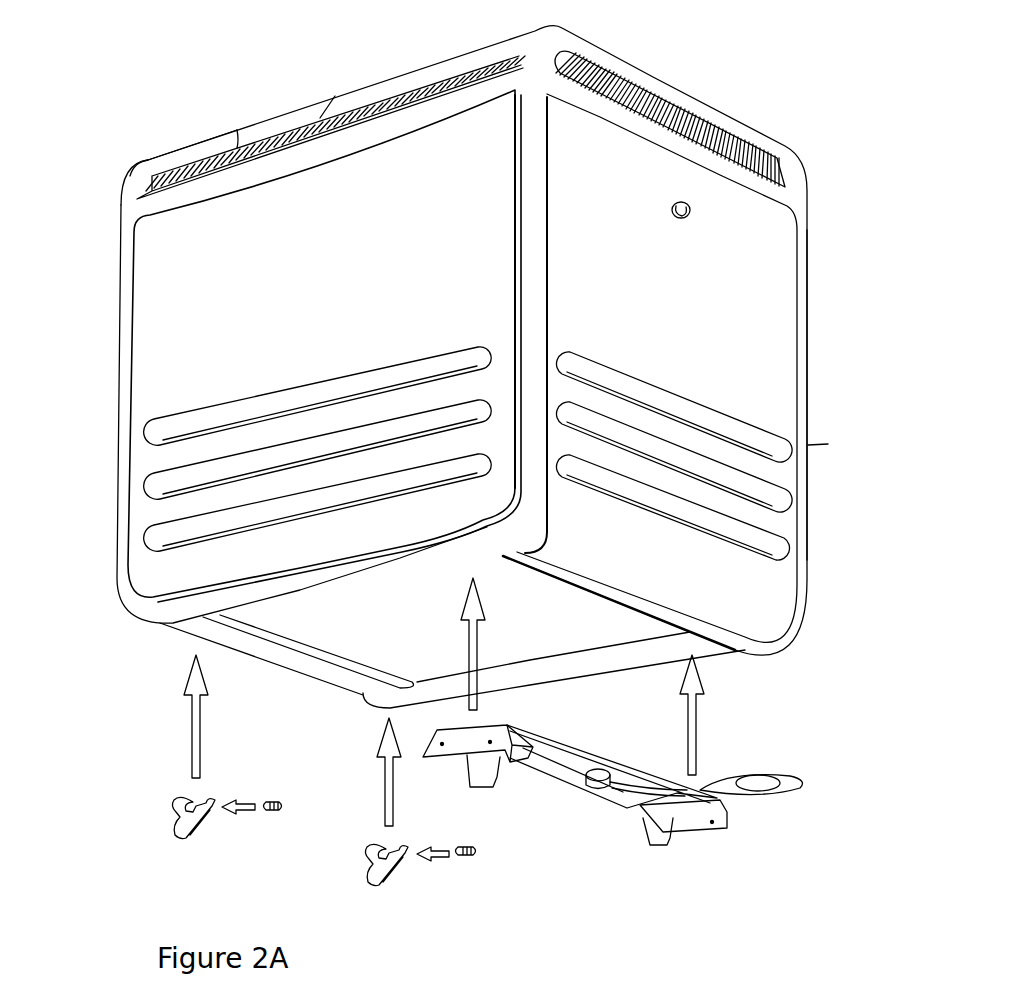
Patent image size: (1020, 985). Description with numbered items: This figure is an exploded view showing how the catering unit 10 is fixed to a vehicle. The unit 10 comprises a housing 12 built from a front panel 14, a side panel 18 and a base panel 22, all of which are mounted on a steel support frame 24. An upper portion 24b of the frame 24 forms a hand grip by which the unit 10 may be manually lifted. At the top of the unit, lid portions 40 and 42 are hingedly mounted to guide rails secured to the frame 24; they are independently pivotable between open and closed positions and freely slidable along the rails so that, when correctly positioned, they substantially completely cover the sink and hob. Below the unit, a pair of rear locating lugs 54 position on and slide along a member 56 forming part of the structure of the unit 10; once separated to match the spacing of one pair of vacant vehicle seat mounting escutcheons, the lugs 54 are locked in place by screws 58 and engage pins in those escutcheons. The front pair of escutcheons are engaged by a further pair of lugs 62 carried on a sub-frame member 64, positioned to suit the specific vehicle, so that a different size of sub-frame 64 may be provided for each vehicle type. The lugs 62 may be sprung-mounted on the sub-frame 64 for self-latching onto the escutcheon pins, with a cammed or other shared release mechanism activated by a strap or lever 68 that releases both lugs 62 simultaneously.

The catering unit 10 is at (707, 33).
The housing 12 is at (777, 257).
The front panel 14 is at (780, 378).
The side panel 18 is at (163, 347).
The base panel 22 is at (610, 625).
The steel support frame 24 is at (121, 277).
The upper portion of frame 24b is at (823, 92).
The lid portion 40 is at (363, 95).
The lid portion 42 is at (198, 140).
The rear locating lug 54 is at (190, 820).
The member 56 is at (305, 650).
The screw 58 is at (268, 802).
The lug 62 is at (480, 788).
The sub-frame member 64 is at (613, 762).
The strap or lever 68 is at (800, 782).